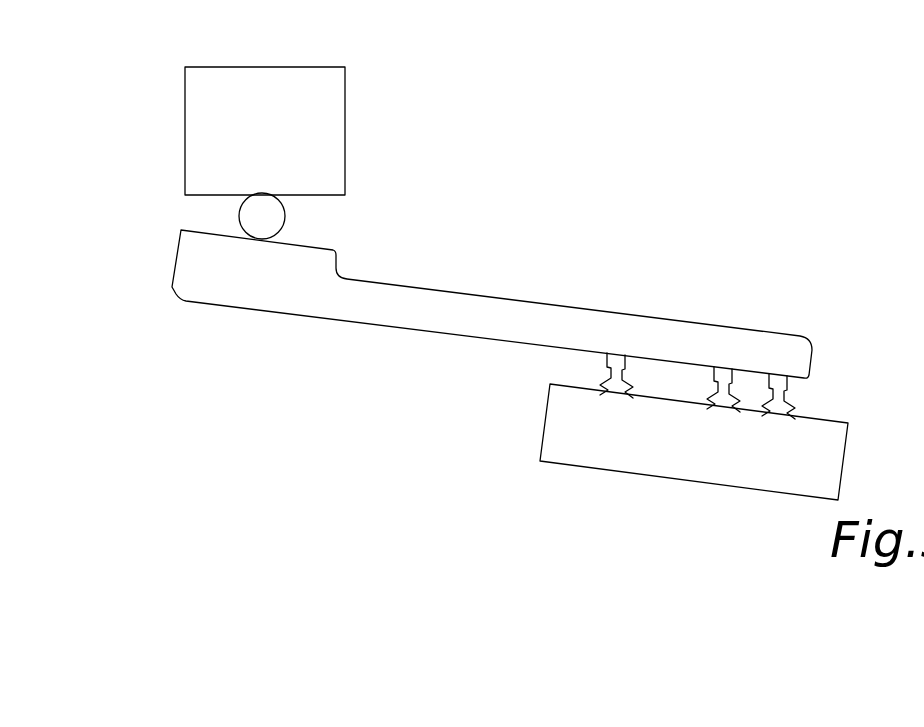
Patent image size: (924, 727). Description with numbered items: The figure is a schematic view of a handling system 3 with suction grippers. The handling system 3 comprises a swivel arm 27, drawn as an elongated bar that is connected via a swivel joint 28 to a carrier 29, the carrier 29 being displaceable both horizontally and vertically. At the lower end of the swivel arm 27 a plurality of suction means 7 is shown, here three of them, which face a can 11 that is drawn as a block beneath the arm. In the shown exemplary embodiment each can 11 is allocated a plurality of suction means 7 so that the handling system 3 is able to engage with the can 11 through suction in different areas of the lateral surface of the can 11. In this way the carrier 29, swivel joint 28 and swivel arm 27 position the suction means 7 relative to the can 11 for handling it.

The handling system 3 is at (576, 224).
The suction means 7 is at (625, 372).
The can 11 is at (645, 455).
The swivel arm 27 is at (303, 292).
The swivel joint 28 is at (270, 223).
The carrier 29 is at (335, 132).